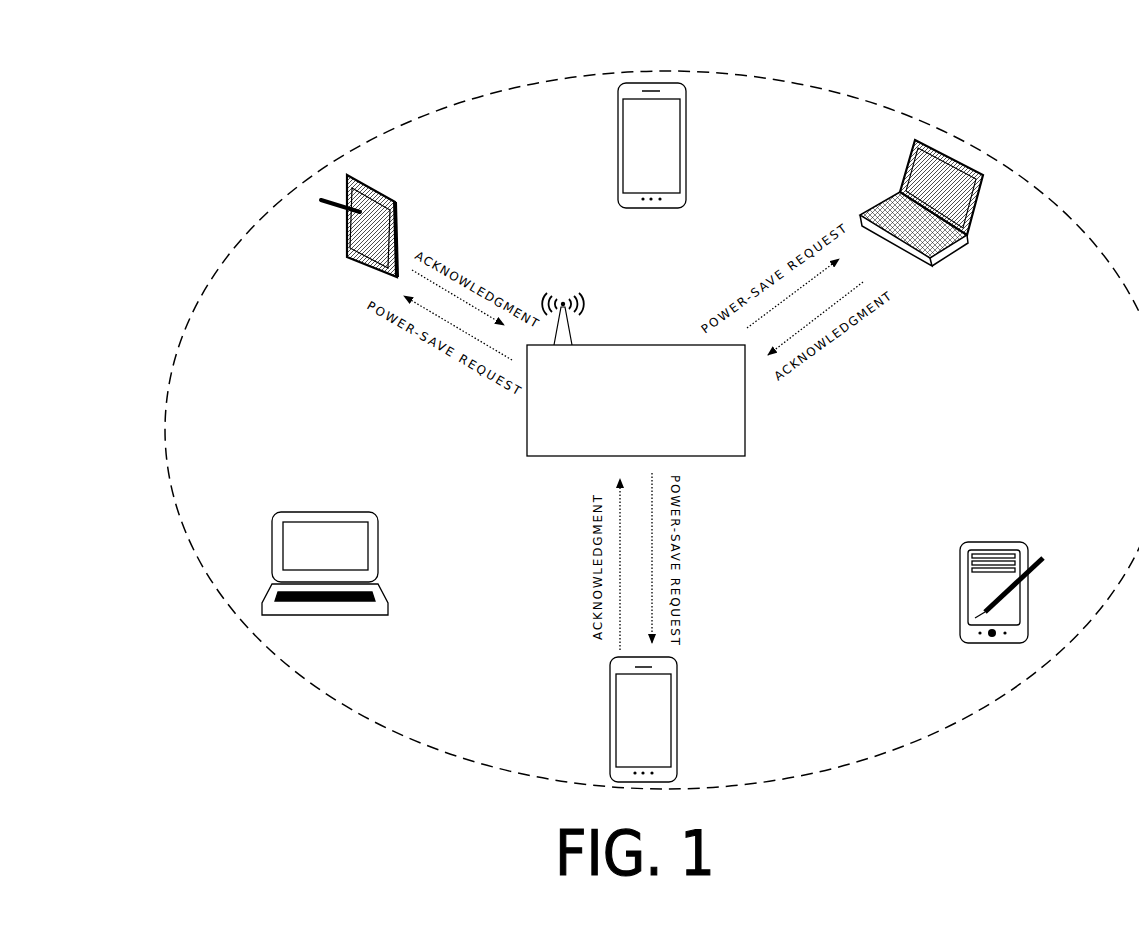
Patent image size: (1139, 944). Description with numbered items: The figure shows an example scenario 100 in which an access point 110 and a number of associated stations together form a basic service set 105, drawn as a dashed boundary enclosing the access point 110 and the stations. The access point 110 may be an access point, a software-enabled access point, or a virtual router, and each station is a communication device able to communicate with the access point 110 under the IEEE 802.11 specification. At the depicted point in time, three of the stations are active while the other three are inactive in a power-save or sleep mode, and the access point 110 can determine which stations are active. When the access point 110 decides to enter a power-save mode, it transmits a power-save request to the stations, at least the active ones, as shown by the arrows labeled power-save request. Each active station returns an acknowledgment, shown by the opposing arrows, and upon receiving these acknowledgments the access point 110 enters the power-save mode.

The example scenario 100 is at (238, 78).
The basic service set 105 is at (1052, 202).
The access point 110 is at (602, 345).